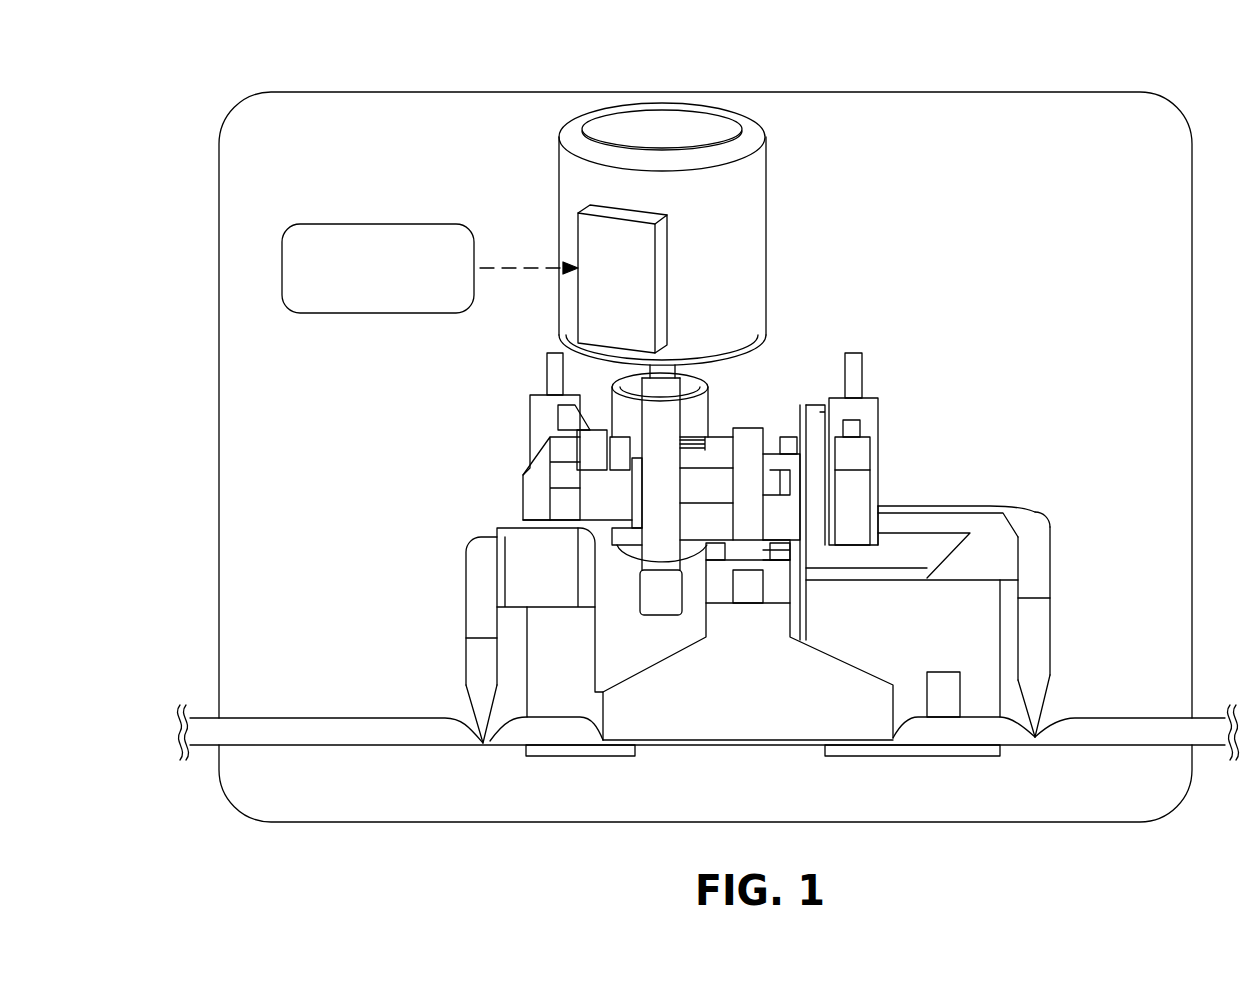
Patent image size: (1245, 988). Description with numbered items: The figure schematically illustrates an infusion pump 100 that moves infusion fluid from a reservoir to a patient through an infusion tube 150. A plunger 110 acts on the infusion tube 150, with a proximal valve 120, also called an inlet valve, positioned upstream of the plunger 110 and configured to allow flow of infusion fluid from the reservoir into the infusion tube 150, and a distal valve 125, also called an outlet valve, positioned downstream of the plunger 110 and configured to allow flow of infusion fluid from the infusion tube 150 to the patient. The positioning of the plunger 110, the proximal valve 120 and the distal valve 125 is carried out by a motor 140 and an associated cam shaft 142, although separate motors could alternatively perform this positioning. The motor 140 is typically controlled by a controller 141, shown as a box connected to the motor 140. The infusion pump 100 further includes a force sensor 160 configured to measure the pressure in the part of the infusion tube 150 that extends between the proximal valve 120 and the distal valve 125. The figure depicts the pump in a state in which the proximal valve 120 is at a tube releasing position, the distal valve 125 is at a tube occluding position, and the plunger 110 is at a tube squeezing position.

The infusion pump 100 is at (1045, 80).
The plunger 110 is at (752, 720).
The proximal valve 120 is at (1040, 706).
The distal valve 125 is at (480, 713).
The motor 140 is at (562, 162).
The controller 141 is at (327, 224).
The cam shaft 142 is at (733, 412).
The infusion tube 150 is at (367, 728).
The force sensor 160 is at (945, 700).